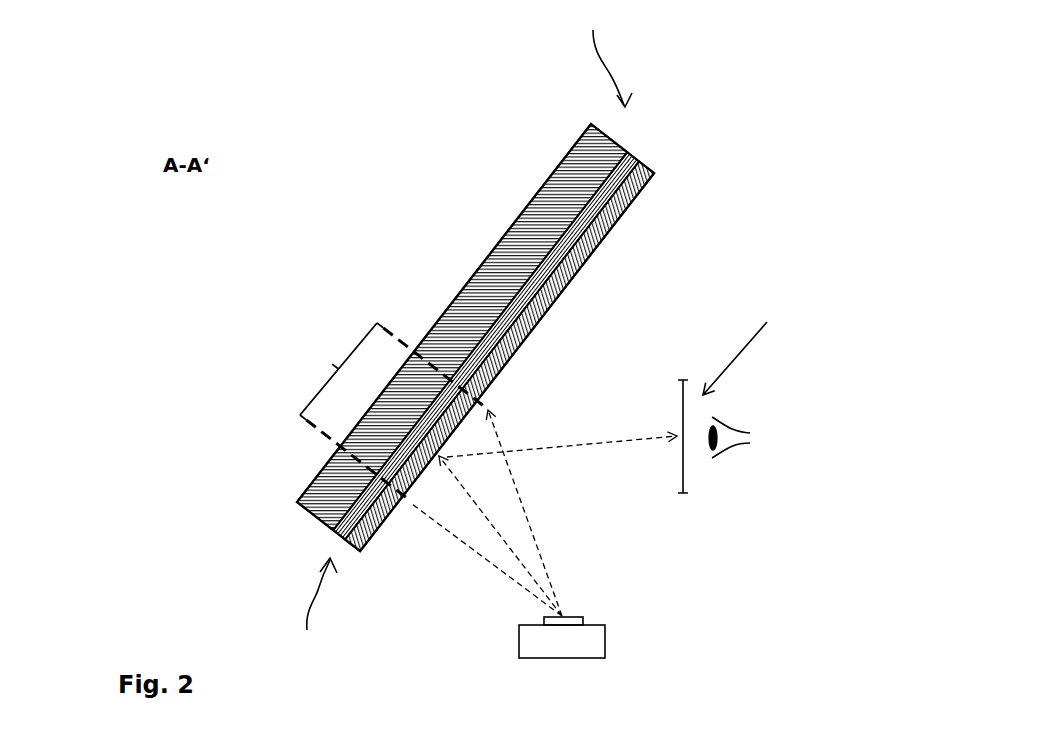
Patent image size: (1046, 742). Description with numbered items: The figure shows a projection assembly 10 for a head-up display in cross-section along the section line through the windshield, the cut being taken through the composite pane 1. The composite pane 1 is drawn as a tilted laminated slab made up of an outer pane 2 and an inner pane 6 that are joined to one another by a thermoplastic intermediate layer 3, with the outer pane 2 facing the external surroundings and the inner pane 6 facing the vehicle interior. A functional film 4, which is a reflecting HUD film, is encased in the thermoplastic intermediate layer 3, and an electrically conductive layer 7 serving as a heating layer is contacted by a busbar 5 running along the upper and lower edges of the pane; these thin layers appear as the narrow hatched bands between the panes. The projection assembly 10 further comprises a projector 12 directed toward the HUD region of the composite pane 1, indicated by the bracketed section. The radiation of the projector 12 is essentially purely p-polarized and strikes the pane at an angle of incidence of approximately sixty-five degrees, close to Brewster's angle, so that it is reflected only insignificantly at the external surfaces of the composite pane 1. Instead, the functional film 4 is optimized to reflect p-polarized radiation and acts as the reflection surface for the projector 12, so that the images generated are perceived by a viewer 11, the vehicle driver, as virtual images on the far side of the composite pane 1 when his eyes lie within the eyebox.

The composite pane 1 is at (560, 101).
The outer pane 2 is at (455, 318).
The thermoplastic intermediate layer 3 is at (558, 301).
The functional film 4 is at (558, 301).
The busbar 5 is at (633, 156).
The inner pane 6 is at (652, 177).
The electrically conductive layer 7 is at (558, 301).
The projection assembly 10 is at (202, 330).
The viewer 11 is at (750, 405).
The projector 12 is at (585, 645).